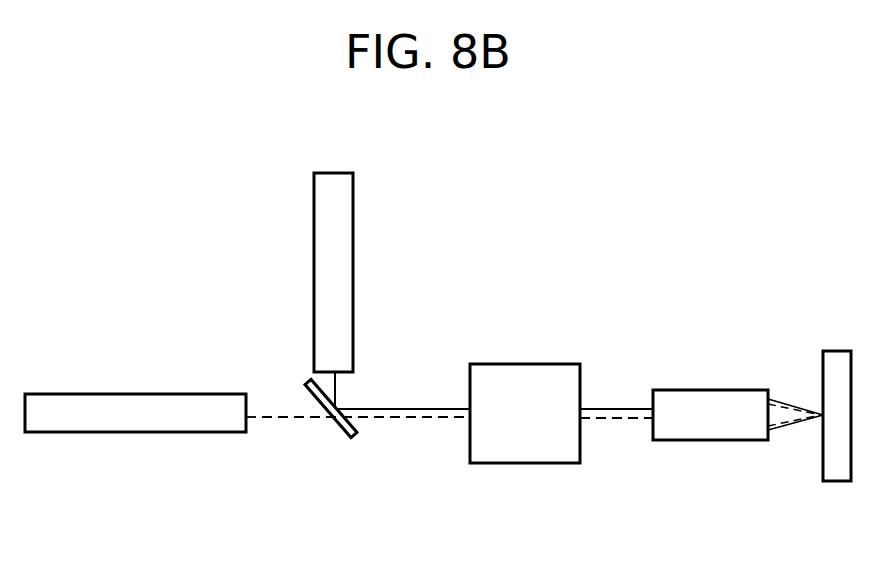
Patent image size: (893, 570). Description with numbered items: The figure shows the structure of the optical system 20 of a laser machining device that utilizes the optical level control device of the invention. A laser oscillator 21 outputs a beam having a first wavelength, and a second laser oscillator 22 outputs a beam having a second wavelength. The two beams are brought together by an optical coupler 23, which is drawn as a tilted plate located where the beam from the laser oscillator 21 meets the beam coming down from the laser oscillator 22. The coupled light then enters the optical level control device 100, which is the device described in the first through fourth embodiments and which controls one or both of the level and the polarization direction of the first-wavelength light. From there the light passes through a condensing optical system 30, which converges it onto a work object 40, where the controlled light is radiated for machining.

The optical system 20 is at (439, 171).
The laser oscillator 21 is at (150, 394).
The laser oscillator 22 is at (353, 284).
The optical coupler 23 is at (340, 432).
The optical level control device 100 is at (526, 364).
The condensing optical system 30 is at (720, 390).
The work object 40 is at (836, 351).